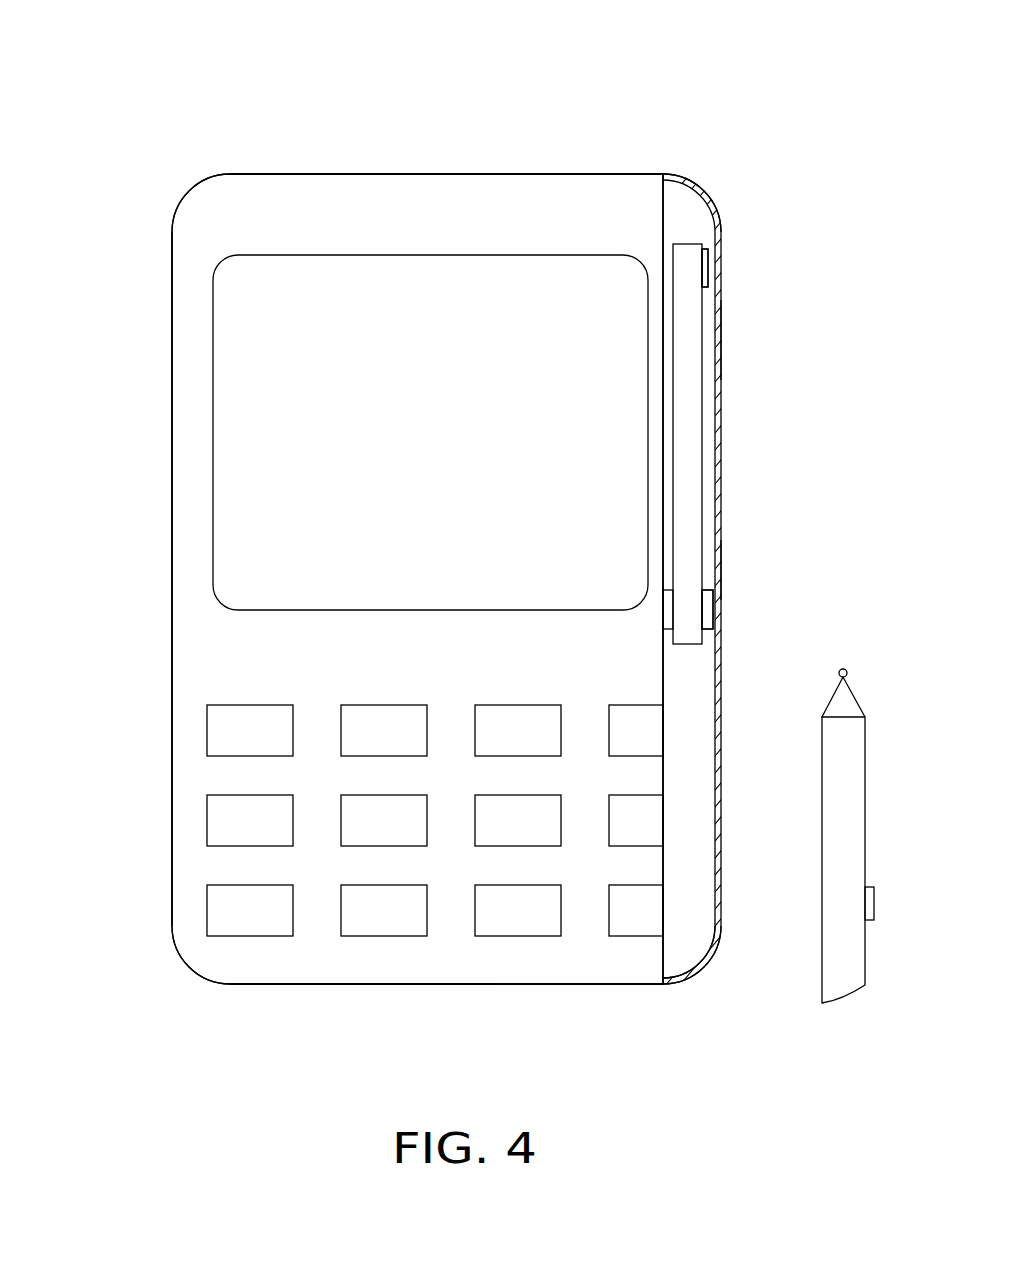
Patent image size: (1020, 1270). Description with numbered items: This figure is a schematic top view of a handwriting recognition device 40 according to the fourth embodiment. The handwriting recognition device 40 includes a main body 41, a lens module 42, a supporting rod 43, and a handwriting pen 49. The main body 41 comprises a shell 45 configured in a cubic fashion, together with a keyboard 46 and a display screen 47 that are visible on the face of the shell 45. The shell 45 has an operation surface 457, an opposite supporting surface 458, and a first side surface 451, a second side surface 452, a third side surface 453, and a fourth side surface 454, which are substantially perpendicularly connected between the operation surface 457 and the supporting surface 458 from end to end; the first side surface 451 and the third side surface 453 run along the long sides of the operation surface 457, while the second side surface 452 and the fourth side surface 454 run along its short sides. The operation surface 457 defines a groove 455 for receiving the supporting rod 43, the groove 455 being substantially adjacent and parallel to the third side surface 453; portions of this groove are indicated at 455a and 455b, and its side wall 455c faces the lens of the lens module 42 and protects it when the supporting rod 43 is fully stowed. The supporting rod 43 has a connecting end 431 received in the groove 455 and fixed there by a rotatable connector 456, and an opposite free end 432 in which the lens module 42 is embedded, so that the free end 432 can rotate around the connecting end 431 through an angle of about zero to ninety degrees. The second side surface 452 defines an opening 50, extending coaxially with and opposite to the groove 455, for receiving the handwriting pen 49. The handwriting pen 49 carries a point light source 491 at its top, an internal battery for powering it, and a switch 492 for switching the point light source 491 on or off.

The handwriting recognition device 40 is at (270, 77).
The main body 41 is at (718, 180).
The lens module 42 is at (707, 268).
The supporting rod 43 is at (700, 468).
The connecting end 431 is at (702, 598).
The free end 432 is at (690, 252).
The shell 45 is at (197, 953).
The first side surface 451 is at (172, 483).
The second side surface 452 is at (516, 984).
The third side surface 453 is at (724, 912).
The fourth side surface 454 is at (441, 174).
The groove 455 is at (708, 408).
The first portion of second side wall 455a is at (710, 572).
The second portion of second side wall 455b is at (678, 203).
The side wall 455c is at (718, 340).
The rotatable connector 456 is at (708, 622).
The operation surface 457 is at (383, 973).
The supporting surface 458 is at (291, 174).
The keyboard 46 is at (215, 731).
The display screen 47 is at (240, 298).
The handwriting pen 49 is at (832, 782).
The point light source 491 is at (839, 674).
The switch 492 is at (866, 893).
The opening 50 is at (686, 952).